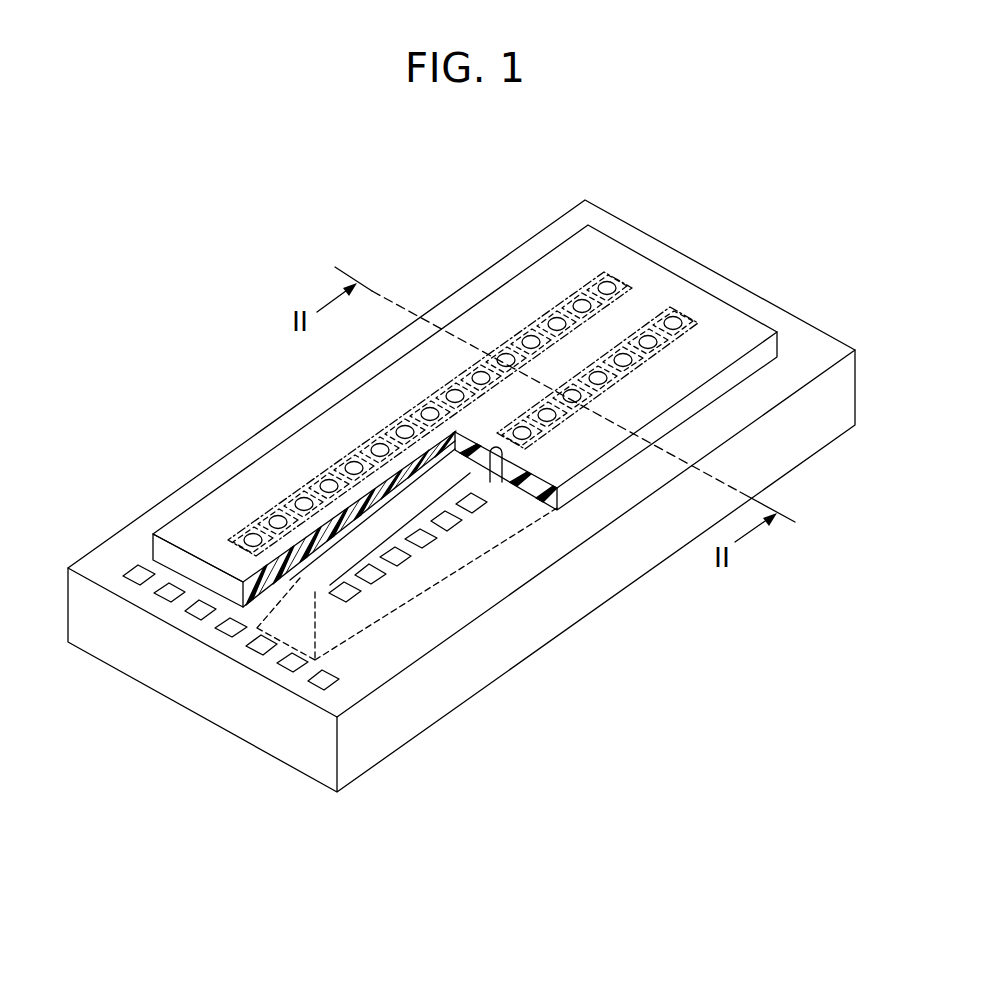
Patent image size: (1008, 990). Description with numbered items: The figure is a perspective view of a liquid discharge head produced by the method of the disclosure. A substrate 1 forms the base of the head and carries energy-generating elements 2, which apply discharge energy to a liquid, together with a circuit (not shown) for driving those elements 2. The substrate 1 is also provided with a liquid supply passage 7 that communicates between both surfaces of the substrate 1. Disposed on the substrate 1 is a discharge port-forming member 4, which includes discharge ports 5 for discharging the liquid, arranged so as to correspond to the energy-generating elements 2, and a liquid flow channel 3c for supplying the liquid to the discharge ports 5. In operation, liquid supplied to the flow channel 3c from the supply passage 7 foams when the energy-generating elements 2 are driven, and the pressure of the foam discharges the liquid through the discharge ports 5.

The substrate 1 is at (710, 267).
The energy-generating elements 2 is at (397, 563).
The discharge port-forming member 4 is at (770, 350).
The discharge ports 5 is at (518, 432).
The liquid supply passage 7 is at (408, 525).
The liquid flow channel 3c is at (292, 575).